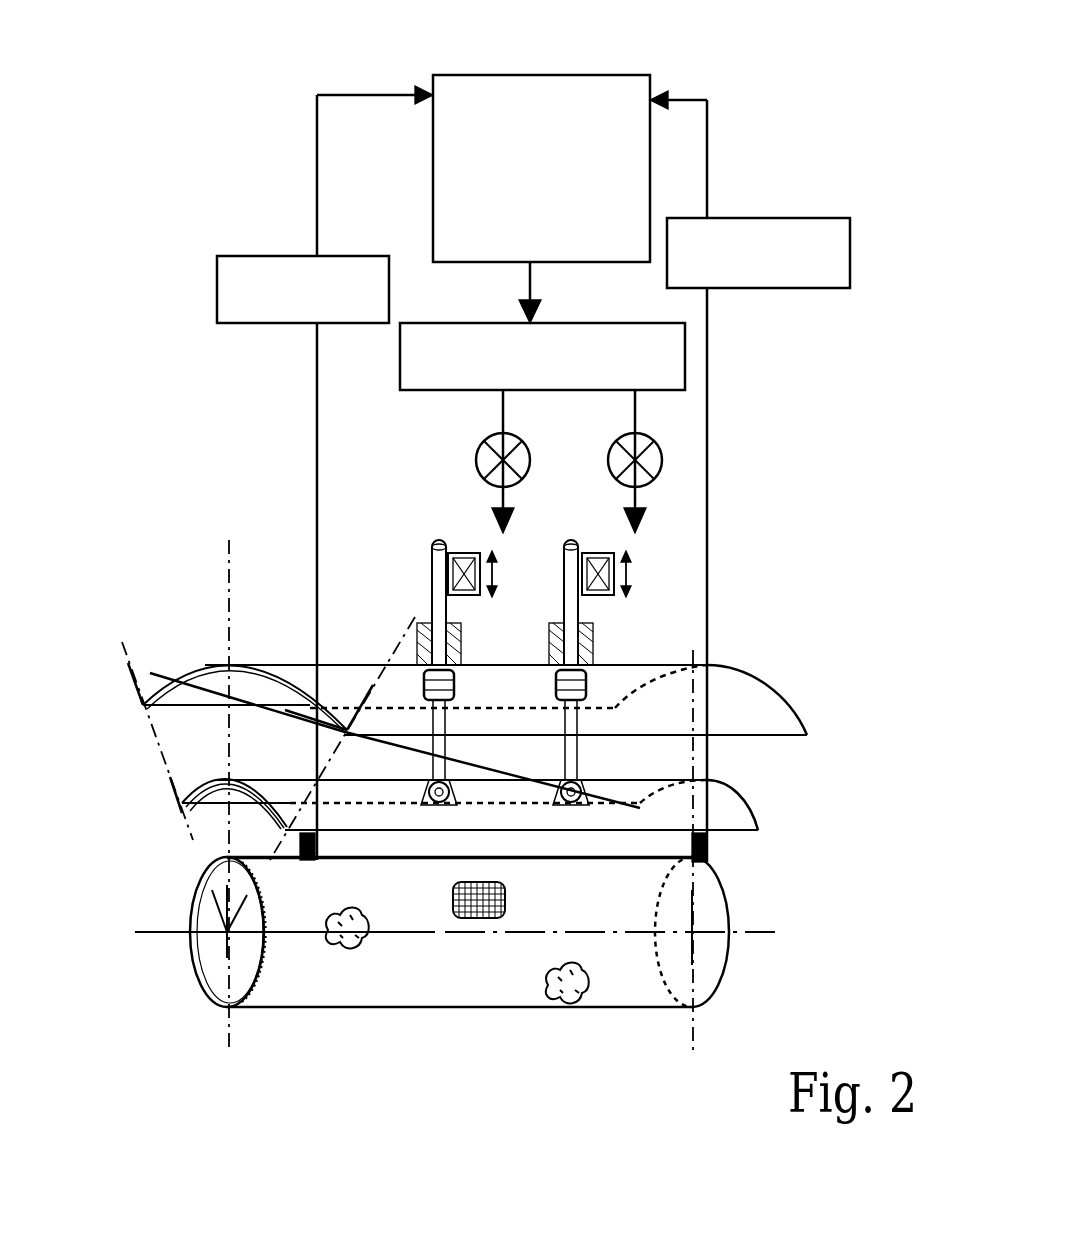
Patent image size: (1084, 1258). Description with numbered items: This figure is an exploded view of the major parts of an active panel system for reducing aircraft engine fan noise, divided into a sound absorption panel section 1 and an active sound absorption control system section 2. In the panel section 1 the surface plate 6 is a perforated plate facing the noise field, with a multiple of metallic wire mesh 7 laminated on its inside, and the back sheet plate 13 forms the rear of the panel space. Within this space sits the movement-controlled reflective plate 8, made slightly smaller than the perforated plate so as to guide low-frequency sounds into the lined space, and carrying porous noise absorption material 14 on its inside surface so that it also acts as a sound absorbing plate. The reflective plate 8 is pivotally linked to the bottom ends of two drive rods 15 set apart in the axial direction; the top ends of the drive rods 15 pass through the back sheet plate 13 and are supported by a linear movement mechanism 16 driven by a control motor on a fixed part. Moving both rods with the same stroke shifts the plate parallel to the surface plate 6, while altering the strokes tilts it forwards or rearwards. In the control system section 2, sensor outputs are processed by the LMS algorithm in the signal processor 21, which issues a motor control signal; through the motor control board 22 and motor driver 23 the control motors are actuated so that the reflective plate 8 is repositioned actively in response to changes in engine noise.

The sound absorption panel section 1 is at (132, 752).
The active sound absorption control system section 2 is at (752, 165).
The surface plate 6 is at (358, 995).
The metallic wire mesh 7 is at (490, 918).
The movement-controlled reflective plate 8 is at (745, 790).
The back sheet plate 13 is at (770, 685).
The porous noise absorption material 14 is at (210, 805).
The drive rod 15 is at (430, 567).
The linear movement mechanism 16 is at (607, 595).
The signal processor 21 is at (578, 75).
The motor control board 22 is at (685, 352).
The motor driver 23 is at (475, 460).